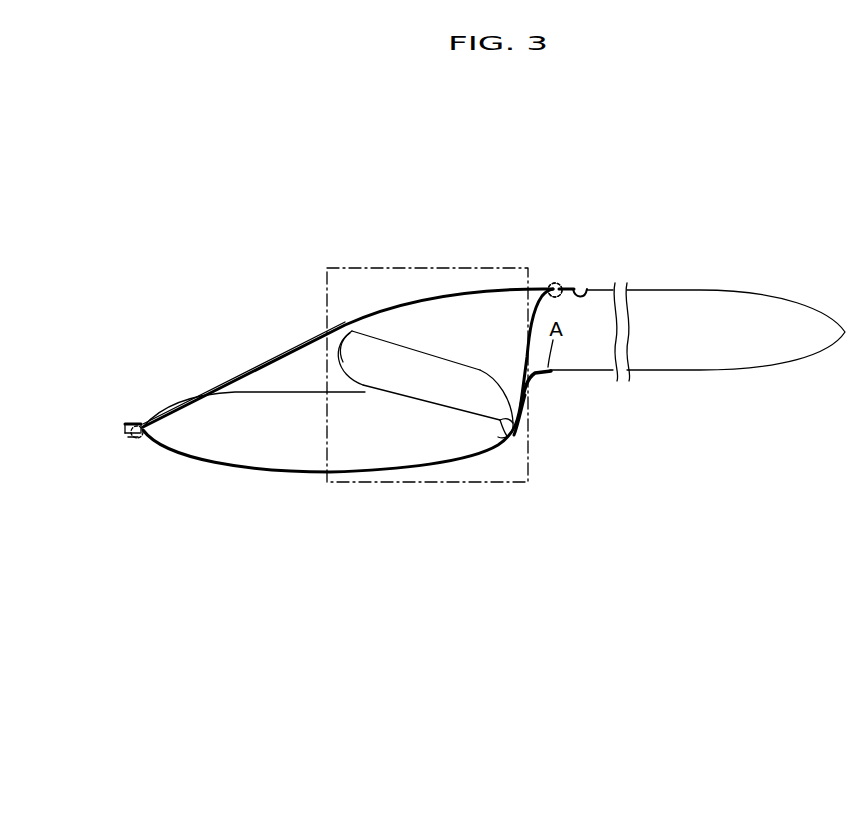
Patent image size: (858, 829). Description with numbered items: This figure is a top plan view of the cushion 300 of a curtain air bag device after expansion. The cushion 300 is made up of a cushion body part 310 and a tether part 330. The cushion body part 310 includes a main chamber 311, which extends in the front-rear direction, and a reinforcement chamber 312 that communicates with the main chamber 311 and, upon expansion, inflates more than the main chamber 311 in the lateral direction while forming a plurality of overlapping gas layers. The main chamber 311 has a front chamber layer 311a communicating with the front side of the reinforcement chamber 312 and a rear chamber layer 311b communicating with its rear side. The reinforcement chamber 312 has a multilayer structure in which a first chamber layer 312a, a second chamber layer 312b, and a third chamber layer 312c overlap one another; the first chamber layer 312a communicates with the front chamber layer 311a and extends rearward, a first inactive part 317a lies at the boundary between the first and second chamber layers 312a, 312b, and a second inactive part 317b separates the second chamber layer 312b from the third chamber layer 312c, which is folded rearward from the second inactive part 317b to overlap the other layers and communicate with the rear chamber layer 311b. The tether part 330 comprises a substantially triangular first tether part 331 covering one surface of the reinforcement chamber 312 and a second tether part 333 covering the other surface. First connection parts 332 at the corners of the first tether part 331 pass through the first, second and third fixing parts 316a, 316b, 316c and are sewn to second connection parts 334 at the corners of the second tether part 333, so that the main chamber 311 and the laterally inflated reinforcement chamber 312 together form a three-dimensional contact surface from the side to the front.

The cushion 300 is at (701, 247).
The cushion body part 310 is at (620, 393).
The main chamber 311 is at (335, 522).
The front chamber layer 311a is at (315, 458).
The rear chamber layer 311b is at (603, 365).
The reinforcement chamber 312 is at (327, 285).
The first chamber layer 312a is at (355, 414).
The second chamber layer 312b is at (413, 383).
The third chamber layer 312c is at (481, 320).
The first fixing part 316a is at (550, 286).
The second fixing part 316b is at (555, 290).
The third fixing part 316c is at (139, 435).
The first inactive part 317a is at (518, 418).
The second inactive part 317b is at (335, 332).
The tether part 330 is at (192, 510).
The first tether part 331 is at (188, 463).
The first connection parts 332 is at (587, 285).
The second tether part 333 is at (223, 383).
The second connection parts 334 is at (557, 283).